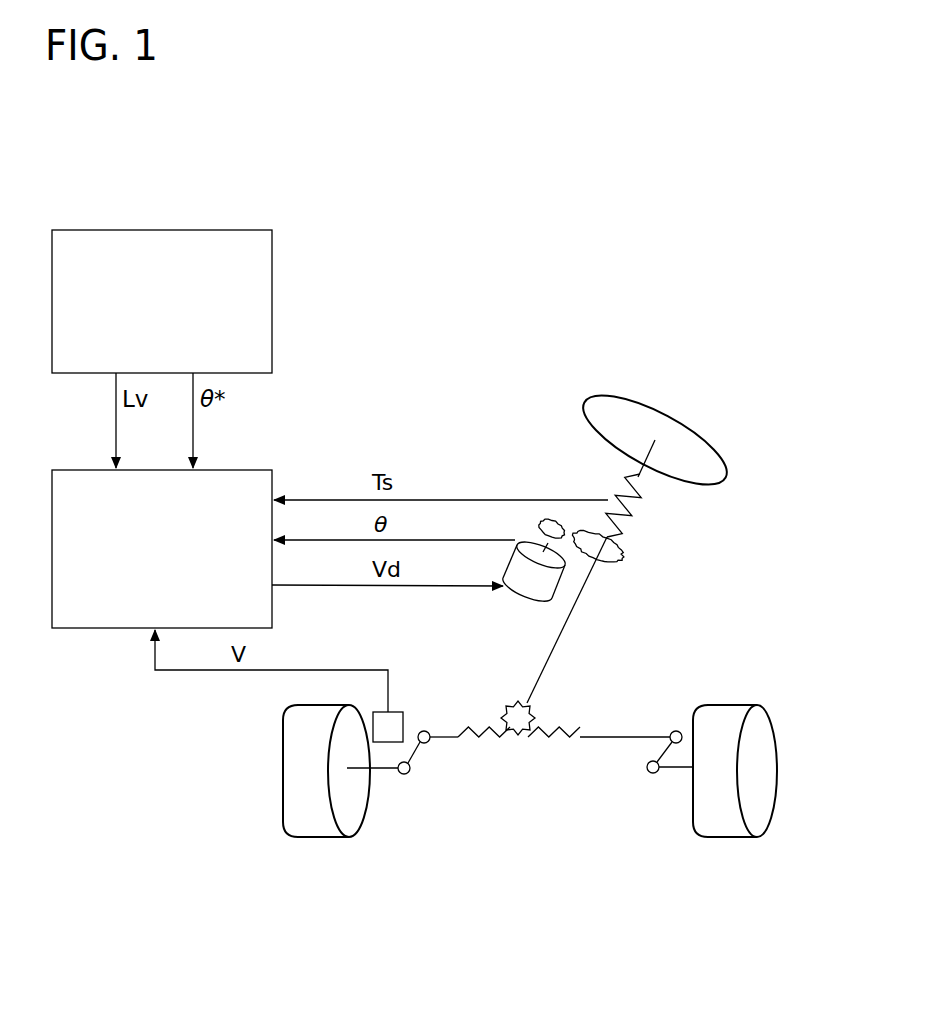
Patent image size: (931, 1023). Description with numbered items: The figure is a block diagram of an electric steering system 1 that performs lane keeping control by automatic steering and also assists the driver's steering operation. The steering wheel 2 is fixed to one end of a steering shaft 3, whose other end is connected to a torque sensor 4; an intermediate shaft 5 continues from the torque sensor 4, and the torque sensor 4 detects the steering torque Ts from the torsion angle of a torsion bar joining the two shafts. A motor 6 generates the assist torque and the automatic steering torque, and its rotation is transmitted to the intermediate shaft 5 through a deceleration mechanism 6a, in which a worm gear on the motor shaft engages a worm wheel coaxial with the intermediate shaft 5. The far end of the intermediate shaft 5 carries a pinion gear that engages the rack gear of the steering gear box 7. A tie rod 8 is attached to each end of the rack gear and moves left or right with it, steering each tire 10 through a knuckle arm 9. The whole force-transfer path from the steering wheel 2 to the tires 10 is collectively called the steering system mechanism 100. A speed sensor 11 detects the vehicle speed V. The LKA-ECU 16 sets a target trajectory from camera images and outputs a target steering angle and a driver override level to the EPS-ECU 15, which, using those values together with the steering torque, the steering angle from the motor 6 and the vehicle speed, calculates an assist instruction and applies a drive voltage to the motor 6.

The electric steering system 1 is at (668, 328).
The steering wheel 2 is at (703, 437).
The steering shaft 3 is at (638, 461).
The torque sensor 4 is at (630, 502).
The intermediate shaft 5 is at (577, 602).
The motor 6 is at (517, 592).
The deceleration mechanism 6a is at (632, 549).
The steering gear box 7 is at (548, 713).
The tie rod 8 is at (442, 737).
The knuckle arm 9 is at (387, 770).
The tire 10 is at (283, 768).
The speed sensor 11 is at (395, 712).
The EPS-ECU 15 is at (230, 470).
The LKA-ECU 16 is at (272, 258).
The steering system mechanism 100 is at (537, 452).